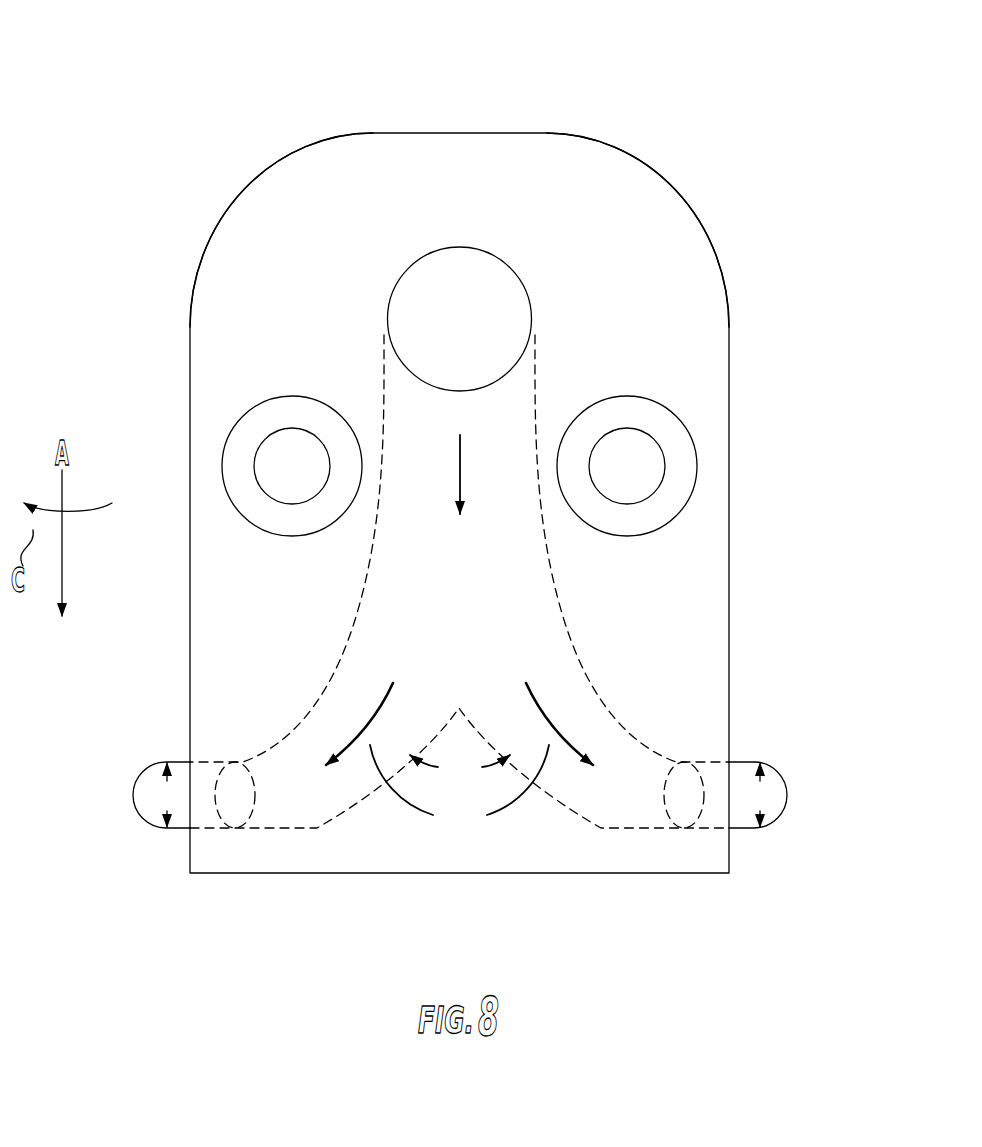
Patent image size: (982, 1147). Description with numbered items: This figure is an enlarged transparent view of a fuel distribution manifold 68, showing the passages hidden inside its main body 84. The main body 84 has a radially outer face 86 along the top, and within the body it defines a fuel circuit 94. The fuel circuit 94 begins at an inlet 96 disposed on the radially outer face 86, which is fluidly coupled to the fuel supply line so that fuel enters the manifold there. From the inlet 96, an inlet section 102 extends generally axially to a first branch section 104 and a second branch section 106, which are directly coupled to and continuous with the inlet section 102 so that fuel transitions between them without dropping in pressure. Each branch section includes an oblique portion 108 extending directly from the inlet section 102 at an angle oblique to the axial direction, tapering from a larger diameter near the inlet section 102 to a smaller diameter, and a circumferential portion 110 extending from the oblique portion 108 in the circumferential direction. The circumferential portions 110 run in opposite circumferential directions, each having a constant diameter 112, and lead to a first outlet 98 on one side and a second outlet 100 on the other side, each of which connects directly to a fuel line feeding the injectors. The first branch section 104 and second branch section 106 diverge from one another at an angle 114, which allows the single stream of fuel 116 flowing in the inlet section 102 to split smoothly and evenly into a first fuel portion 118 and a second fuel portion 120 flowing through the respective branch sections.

The fuel distribution manifold 68 is at (118, 115).
The main body 84 is at (263, 298).
The radially outer face 86 is at (622, 312).
The fuel circuit 94 is at (414, 588).
The inlet 96 is at (476, 300).
The first outlet 98 is at (129, 795).
The second outlet 100 is at (795, 795).
The inlet section 102 is at (466, 538).
The first branch section 104 is at (312, 788).
The second branch section 106 is at (606, 788).
The oblique portion 108 is at (459, 771).
The circumferential portion 110 is at (228, 793).
The constant diameter 112 is at (459, 795).
The angle 114 is at (460, 768).
The single stream of fuel 116 is at (462, 475).
The first fuel portion 118 is at (378, 706).
The second fuel portion 120 is at (541, 706).